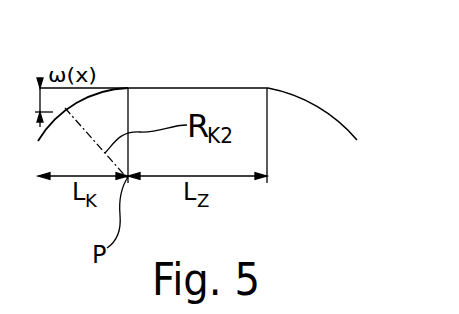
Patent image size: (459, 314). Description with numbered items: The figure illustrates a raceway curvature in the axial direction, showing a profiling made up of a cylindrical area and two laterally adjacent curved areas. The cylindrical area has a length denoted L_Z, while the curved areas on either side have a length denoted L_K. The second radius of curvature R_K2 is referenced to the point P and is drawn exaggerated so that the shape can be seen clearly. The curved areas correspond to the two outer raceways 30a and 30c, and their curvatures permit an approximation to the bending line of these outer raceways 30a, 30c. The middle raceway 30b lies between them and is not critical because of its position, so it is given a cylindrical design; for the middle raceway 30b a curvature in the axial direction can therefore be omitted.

The outer raceway 30a is at (92, 95).
The middle raceway 30b is at (202, 88).
The outer raceway 30c is at (344, 120).